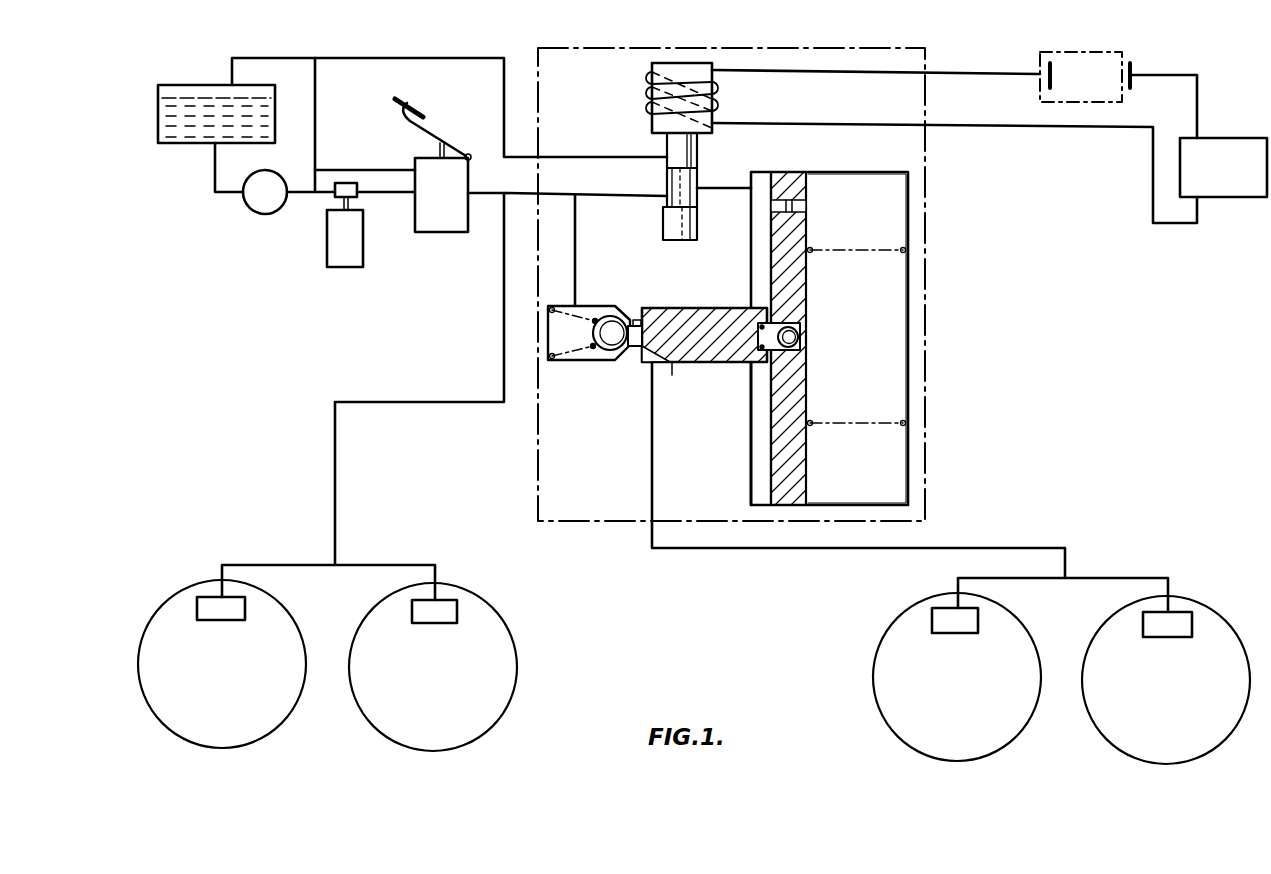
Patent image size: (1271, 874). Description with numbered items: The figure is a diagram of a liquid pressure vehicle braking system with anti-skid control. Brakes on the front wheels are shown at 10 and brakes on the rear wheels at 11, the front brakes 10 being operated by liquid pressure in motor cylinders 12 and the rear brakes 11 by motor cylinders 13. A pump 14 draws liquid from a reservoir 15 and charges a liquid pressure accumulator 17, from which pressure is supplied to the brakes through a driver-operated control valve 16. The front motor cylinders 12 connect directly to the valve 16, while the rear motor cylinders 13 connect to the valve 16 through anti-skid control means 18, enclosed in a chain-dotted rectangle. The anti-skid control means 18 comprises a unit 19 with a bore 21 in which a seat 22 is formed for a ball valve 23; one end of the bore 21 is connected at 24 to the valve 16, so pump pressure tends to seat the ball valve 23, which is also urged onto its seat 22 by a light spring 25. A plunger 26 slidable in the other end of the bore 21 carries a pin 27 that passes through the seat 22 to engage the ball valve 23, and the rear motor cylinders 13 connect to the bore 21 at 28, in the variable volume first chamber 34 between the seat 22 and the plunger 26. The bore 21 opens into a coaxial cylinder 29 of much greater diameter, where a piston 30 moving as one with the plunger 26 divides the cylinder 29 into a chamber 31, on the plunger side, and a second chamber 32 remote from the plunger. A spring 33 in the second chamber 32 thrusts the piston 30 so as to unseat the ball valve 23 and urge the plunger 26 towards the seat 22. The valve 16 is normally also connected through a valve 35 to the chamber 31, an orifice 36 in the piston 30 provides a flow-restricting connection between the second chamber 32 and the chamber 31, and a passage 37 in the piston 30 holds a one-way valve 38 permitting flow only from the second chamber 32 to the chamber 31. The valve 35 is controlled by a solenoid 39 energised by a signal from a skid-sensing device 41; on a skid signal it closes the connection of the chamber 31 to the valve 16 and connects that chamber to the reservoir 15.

The front wheel brakes 10 is at (380, 698).
The rear wheel brakes 11 is at (1110, 708).
The front brake motor cylinders 12 is at (425, 611).
The rear brake motor cylinders 13 is at (1158, 625).
The pump 14 is at (262, 201).
The reservoir 15 is at (276, 121).
The driver-operated control valve 16 is at (445, 211).
The liquid pressure accumulator 17 is at (351, 246).
The anti-skid control means 18 is at (929, 212).
The unit 19 is at (746, 390).
The bore 21 is at (650, 308).
The seat 22 is at (630, 351).
The ball valve 23 is at (607, 338).
The connection to driver-controlled valve 24 is at (578, 304).
The light spring 25 is at (585, 351).
The plunger 26 is at (710, 327).
The pin 27 is at (636, 320).
The connection to rear brake motor cylinders 28 is at (658, 366).
The cylinder 29 is at (860, 507).
The piston 30 is at (788, 486).
The chamber 31 is at (757, 483).
The second chamber 32 is at (893, 463).
The spring 33 is at (855, 426).
The first chamber 34 is at (670, 354).
The valve 35 is at (678, 147).
The orifice 36 is at (787, 200).
The passage 37 is at (780, 324).
The one-way valve 38 is at (796, 341).
The solenoid 39 is at (703, 80).
The skid-sensing device 41 is at (1223, 156).